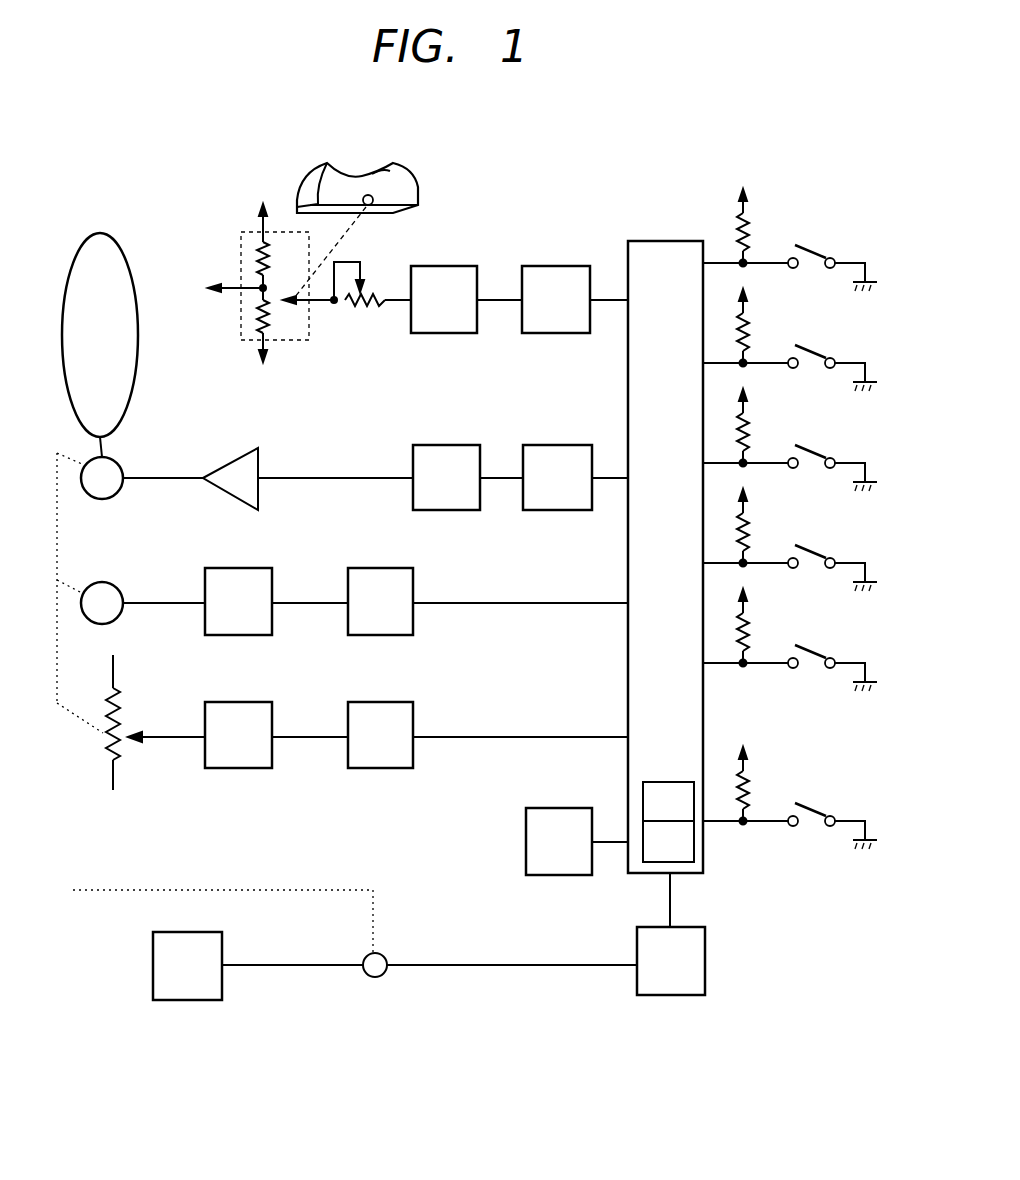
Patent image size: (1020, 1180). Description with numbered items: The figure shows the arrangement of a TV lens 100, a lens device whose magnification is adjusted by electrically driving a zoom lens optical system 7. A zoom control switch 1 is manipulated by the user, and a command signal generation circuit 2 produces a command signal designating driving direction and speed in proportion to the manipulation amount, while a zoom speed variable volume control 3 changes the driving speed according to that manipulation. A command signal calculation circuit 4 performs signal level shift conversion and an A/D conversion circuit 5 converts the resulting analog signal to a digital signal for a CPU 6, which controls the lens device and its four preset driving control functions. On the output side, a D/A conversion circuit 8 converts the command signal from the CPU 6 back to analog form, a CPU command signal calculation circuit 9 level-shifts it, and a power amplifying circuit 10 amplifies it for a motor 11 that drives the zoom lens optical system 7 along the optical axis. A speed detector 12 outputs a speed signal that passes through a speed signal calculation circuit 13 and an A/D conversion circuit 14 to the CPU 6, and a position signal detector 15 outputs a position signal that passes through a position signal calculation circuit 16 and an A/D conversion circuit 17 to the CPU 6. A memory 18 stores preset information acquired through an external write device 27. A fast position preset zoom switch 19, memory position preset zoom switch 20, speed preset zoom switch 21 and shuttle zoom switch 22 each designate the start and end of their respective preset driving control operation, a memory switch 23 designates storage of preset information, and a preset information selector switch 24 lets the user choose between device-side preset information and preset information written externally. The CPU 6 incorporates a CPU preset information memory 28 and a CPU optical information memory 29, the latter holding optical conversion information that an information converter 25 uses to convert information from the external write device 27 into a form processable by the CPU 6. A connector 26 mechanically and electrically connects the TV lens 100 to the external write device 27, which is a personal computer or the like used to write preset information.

The zoom control switch 1 is at (423, 183).
The command signal generation circuit 2 is at (240, 259).
The zoom speed variable volume control 3 is at (357, 308).
The command signal calculation circuit 4 is at (450, 264).
The A/D conversion circuit 5 is at (558, 264).
The CPU 6 is at (660, 240).
The zoom lens optical system 7 is at (112, 235).
The D/A conversion circuit 8 is at (558, 442).
The CPU command signal calculation circuit 9 is at (450, 442).
The power amplifying circuit 10 is at (228, 498).
The motor 11 is at (110, 497).
The speed detector 12 is at (110, 622).
The speed signal calculation circuit 13 is at (238, 637).
The A/D conversion circuit 14 is at (382, 637).
The position signal detector 15 is at (124, 693).
The position signal calculation circuit 16 is at (238, 770).
The A/D conversion circuit 17 is at (382, 770).
The memory 18 is at (563, 878).
The fast position preset zoom (FPZ) switch 19 is at (790, 252).
The memory position preset zoom (MPZ) switch 20 is at (790, 352).
The speed preset zoom (SPZ) switch 21 is at (790, 452).
The shuttle zoom (SHZ) switch 22 is at (790, 552).
The memory (MEMO) switch 23 is at (790, 652).
The preset information selector (SEL) switch 24 is at (790, 810).
The information converter 25 is at (712, 956).
The connector 26 is at (357, 984).
The external write device 27 is at (187, 995).
The CPU preset information memory 28 is at (668, 801).
The CPU optical information memory 29 is at (668, 841).
The TV lens 100 is at (806, 1014).